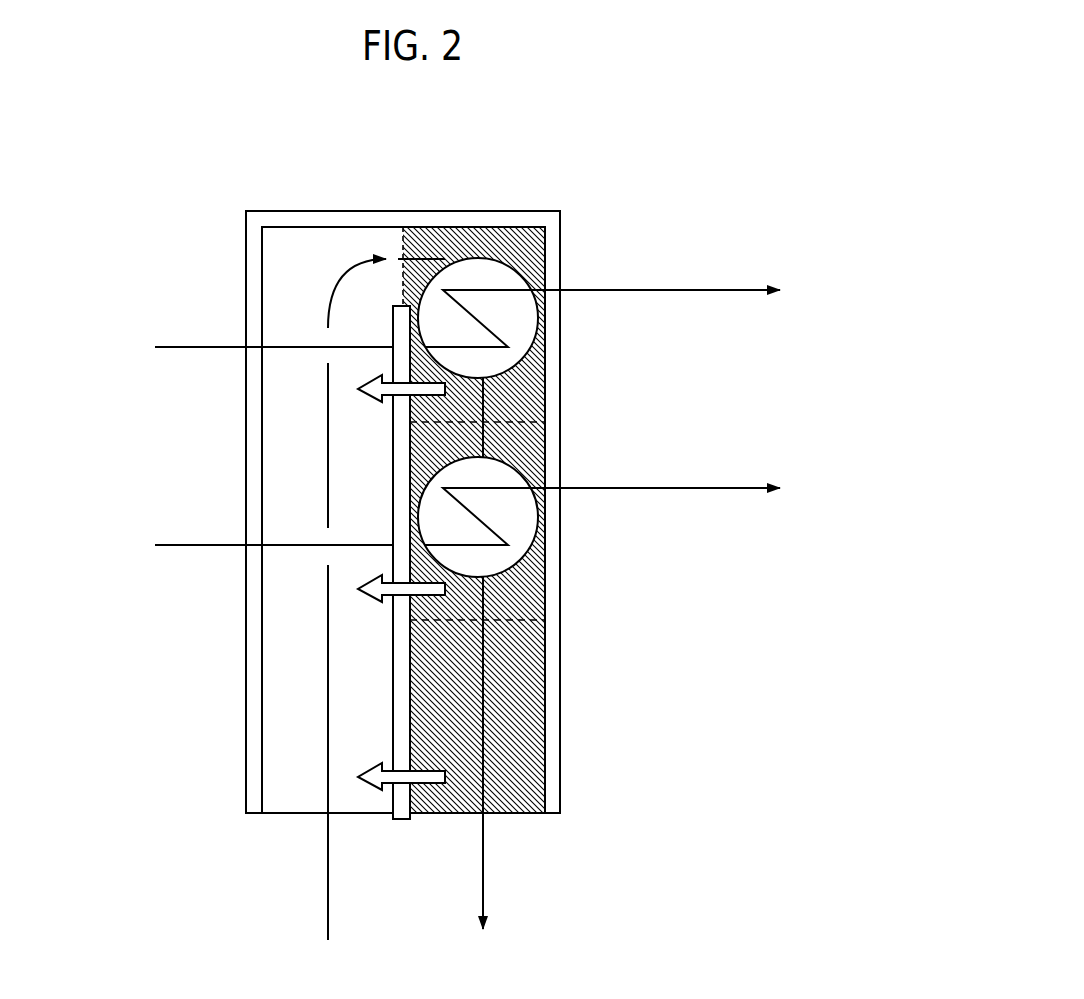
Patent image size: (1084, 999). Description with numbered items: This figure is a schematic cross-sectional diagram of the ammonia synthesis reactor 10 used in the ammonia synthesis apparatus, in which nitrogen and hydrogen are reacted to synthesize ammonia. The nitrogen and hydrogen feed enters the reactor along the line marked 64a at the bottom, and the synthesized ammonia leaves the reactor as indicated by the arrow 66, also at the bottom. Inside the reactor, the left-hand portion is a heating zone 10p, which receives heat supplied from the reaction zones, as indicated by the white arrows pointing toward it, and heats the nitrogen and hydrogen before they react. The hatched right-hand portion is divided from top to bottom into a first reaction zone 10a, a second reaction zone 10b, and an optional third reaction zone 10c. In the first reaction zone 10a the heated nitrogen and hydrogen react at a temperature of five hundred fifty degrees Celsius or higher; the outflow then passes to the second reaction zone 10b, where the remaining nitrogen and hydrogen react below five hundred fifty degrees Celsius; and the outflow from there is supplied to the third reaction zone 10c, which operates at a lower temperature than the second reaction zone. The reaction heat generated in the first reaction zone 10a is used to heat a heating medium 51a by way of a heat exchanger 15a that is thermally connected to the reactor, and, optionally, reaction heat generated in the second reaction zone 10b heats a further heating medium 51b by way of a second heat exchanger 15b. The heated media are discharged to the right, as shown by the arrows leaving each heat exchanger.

The ammonia synthesis reactor 10 is at (266, 163).
The heating zone 10p is at (275, 622).
The first reaction zone 10a is at (535, 387).
The second reaction zone 10b is at (535, 585).
The third reaction zone 10c is at (535, 753).
The heat exchanger 15a is at (530, 330).
The heat exchanger 15b is at (530, 517).
The heating medium 51a is at (193, 348).
The heating medium 51b is at (193, 544).
The unreacted gas discharge line 64a is at (328, 877).
The arrow 66 is at (483, 848).